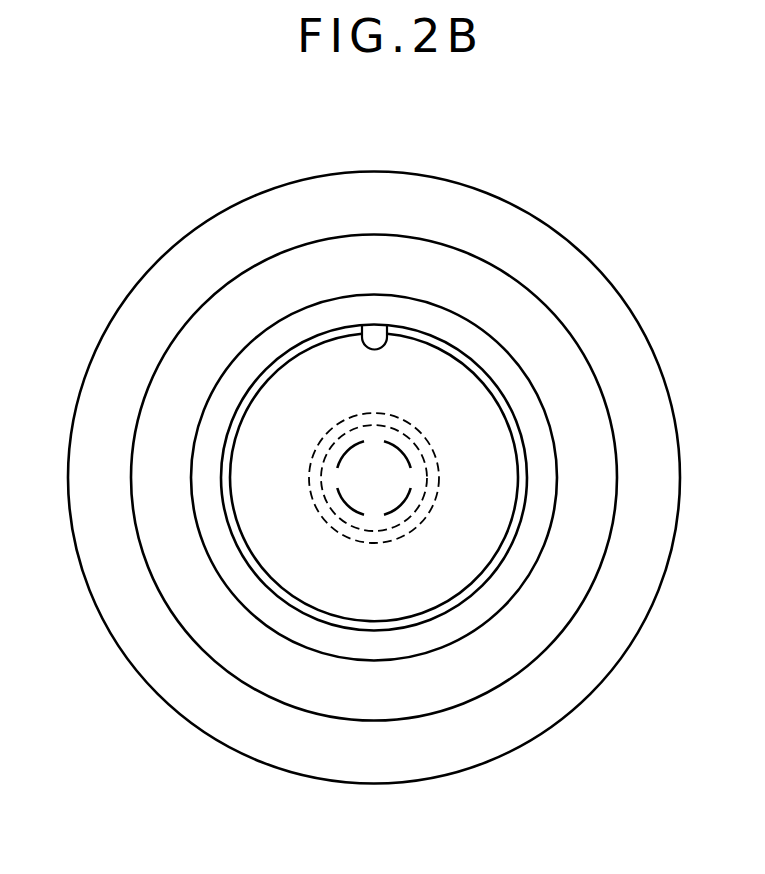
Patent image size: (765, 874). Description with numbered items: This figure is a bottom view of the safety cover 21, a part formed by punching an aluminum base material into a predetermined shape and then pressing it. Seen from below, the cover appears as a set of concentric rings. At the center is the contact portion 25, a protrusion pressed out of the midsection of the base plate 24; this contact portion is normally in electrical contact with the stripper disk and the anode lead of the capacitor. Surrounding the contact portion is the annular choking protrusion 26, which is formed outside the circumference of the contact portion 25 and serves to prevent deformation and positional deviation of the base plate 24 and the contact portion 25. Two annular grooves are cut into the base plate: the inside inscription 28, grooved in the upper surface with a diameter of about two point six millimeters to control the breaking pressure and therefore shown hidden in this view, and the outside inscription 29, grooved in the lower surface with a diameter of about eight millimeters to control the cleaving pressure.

The safety cover 21 is at (582, 250).
The base plate 24 is at (420, 315).
The contact portion 25 is at (375, 475).
The choking protrusion 26 is at (493, 295).
The inside inscription 28 is at (324, 513).
The outside inscription 29 is at (362, 330).